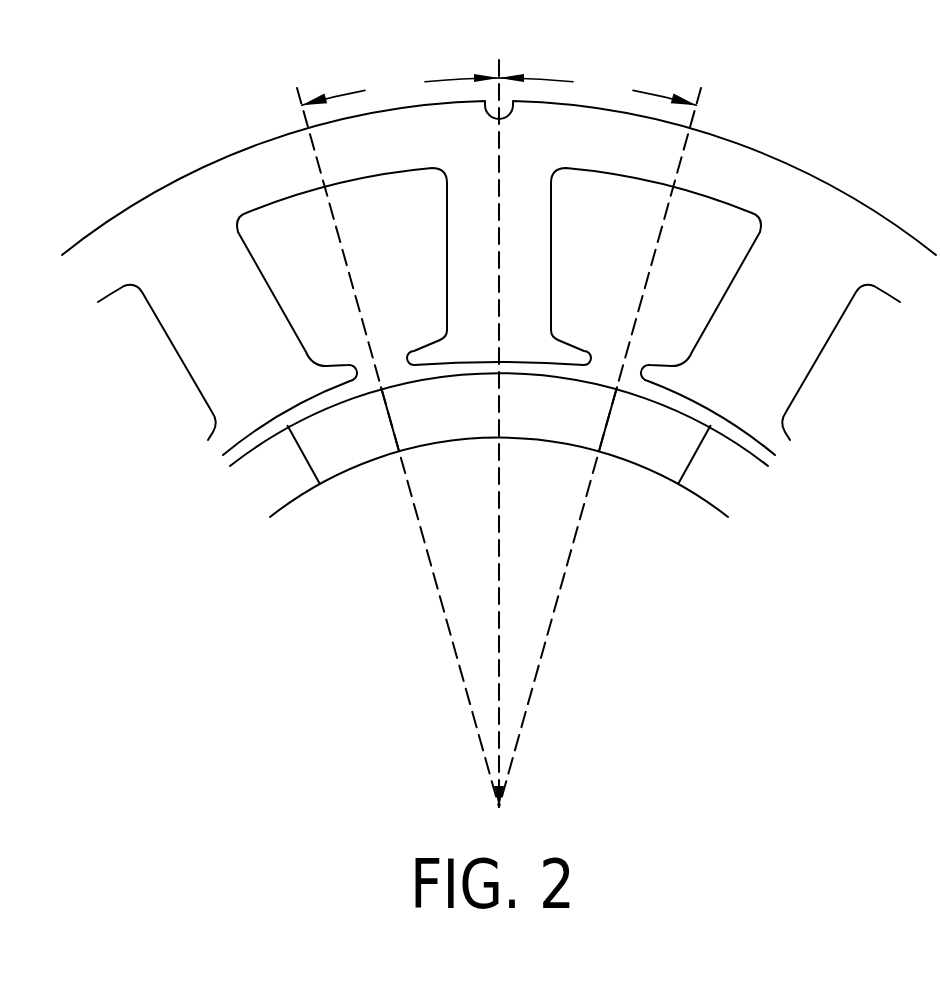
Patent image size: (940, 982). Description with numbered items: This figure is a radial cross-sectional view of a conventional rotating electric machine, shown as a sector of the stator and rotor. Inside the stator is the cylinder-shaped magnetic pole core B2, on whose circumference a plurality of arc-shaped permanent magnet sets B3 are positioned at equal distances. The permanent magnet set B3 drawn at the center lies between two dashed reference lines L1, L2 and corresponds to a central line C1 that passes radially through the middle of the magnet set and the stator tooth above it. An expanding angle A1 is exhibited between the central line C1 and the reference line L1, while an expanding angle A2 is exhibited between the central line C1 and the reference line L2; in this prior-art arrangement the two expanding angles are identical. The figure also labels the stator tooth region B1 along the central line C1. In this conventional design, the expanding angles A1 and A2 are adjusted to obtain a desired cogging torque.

The reference line L1 is at (384, 418).
The reference line L2 is at (611, 420).
The central line C1 is at (495, 408).
The expanding angle A1 is at (400, 86).
The expanding angle A2 is at (597, 86).
The stator tooth width B1 is at (499, 292).
The permanent magnet set B3 is at (499, 428).
The magnetic pole core B2 is at (499, 488).